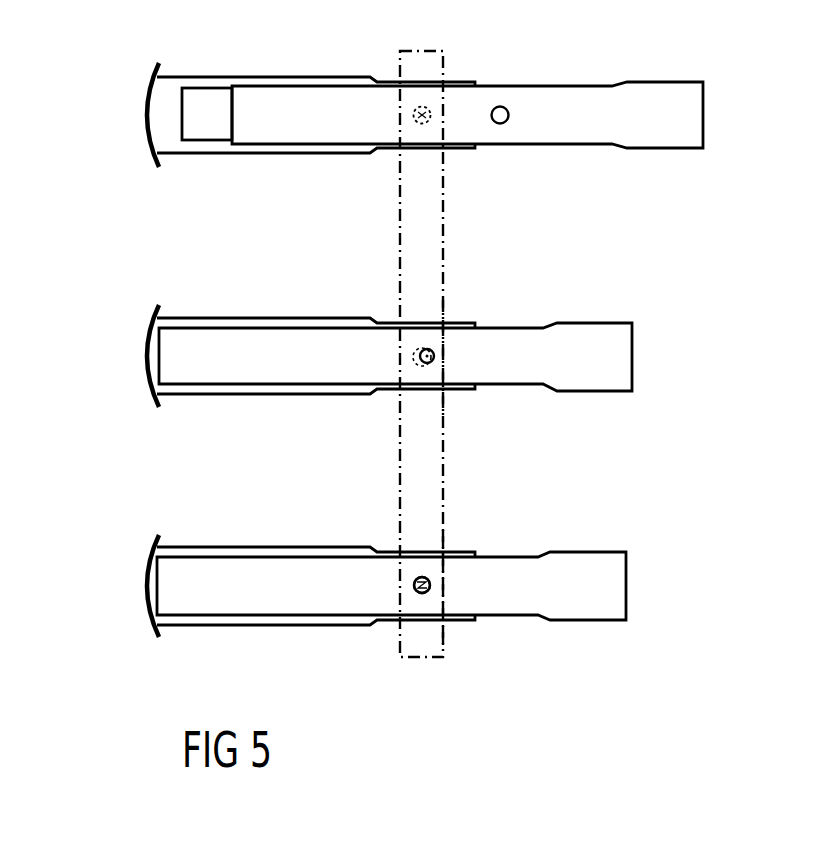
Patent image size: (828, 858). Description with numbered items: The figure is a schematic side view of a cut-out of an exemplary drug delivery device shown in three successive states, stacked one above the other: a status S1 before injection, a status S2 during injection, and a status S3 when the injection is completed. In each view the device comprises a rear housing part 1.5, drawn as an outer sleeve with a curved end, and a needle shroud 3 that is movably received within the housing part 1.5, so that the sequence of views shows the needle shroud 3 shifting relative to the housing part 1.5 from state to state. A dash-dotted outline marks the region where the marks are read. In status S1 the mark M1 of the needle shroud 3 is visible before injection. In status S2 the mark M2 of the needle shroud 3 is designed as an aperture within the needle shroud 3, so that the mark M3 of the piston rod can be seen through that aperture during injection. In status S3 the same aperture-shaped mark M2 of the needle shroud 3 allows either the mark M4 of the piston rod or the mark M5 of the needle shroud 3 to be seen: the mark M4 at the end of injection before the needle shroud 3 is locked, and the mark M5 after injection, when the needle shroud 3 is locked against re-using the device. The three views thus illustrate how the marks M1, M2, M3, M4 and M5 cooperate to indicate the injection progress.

The rear housing part 1.5 is at (157, 108).
The needle shroud 3 is at (630, 95).
The mark of the needle shroud M1 is at (415, 105).
The mark of the needle shroud M2 is at (507, 126).
The mark of the piston rod M3 is at (433, 363).
The mark of the piston rod M4 is at (428, 591).
The mark of the needle shroud M5 is at (422, 585).
The status before injection S1 is at (445, 80).
The status during injection S2 is at (445, 320).
The status when injection is completed S3 is at (445, 550).